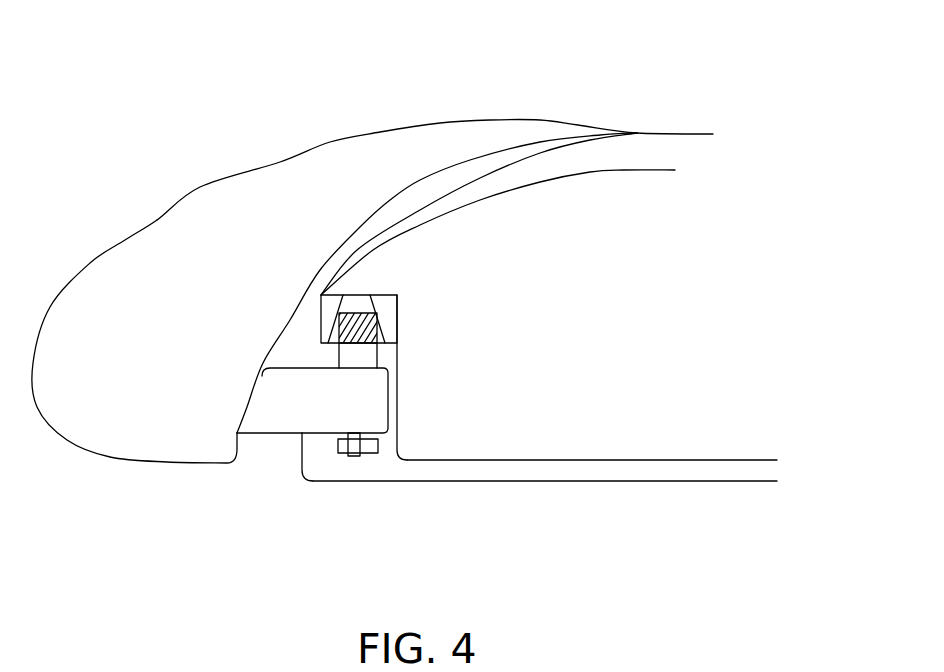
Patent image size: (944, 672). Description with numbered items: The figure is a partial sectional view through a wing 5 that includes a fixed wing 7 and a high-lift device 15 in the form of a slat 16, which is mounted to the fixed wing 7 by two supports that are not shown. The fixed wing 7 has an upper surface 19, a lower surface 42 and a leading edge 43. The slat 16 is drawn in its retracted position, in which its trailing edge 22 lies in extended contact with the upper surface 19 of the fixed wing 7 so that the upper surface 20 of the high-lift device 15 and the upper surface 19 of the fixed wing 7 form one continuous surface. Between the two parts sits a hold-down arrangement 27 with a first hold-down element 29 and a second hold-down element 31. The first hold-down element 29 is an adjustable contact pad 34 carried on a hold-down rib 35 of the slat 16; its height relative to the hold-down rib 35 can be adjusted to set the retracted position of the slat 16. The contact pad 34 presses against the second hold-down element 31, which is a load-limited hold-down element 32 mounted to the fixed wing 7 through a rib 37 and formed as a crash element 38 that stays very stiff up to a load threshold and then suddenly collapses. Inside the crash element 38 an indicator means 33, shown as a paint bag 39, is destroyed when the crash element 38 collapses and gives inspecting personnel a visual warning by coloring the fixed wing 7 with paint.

The wing 5 is at (82, 140).
The fixed wing 7 is at (770, 318).
The high-lift device 15 is at (334, 298).
The slat 16 is at (192, 323).
The upper surface 19 is at (693, 130).
The upper surface 20 is at (330, 142).
The trailing edge 22 is at (573, 88).
The hold-down arrangement 27 is at (500, 313).
The first hold-down element 29 is at (398, 469).
The adjustable contact pad 34 is at (357, 353).
The second hold-down element 31 is at (476, 268).
The crash element 38 is at (476, 268).
The load-limited hold-down element 32 is at (370, 295).
The indicator means 33 is at (445, 294).
The paint bag 39 is at (377, 315).
The hold-down rib 35 is at (263, 397).
The rib 37 is at (647, 170).
The lower surface 42 is at (598, 481).
The leading edge 43 is at (297, 442).